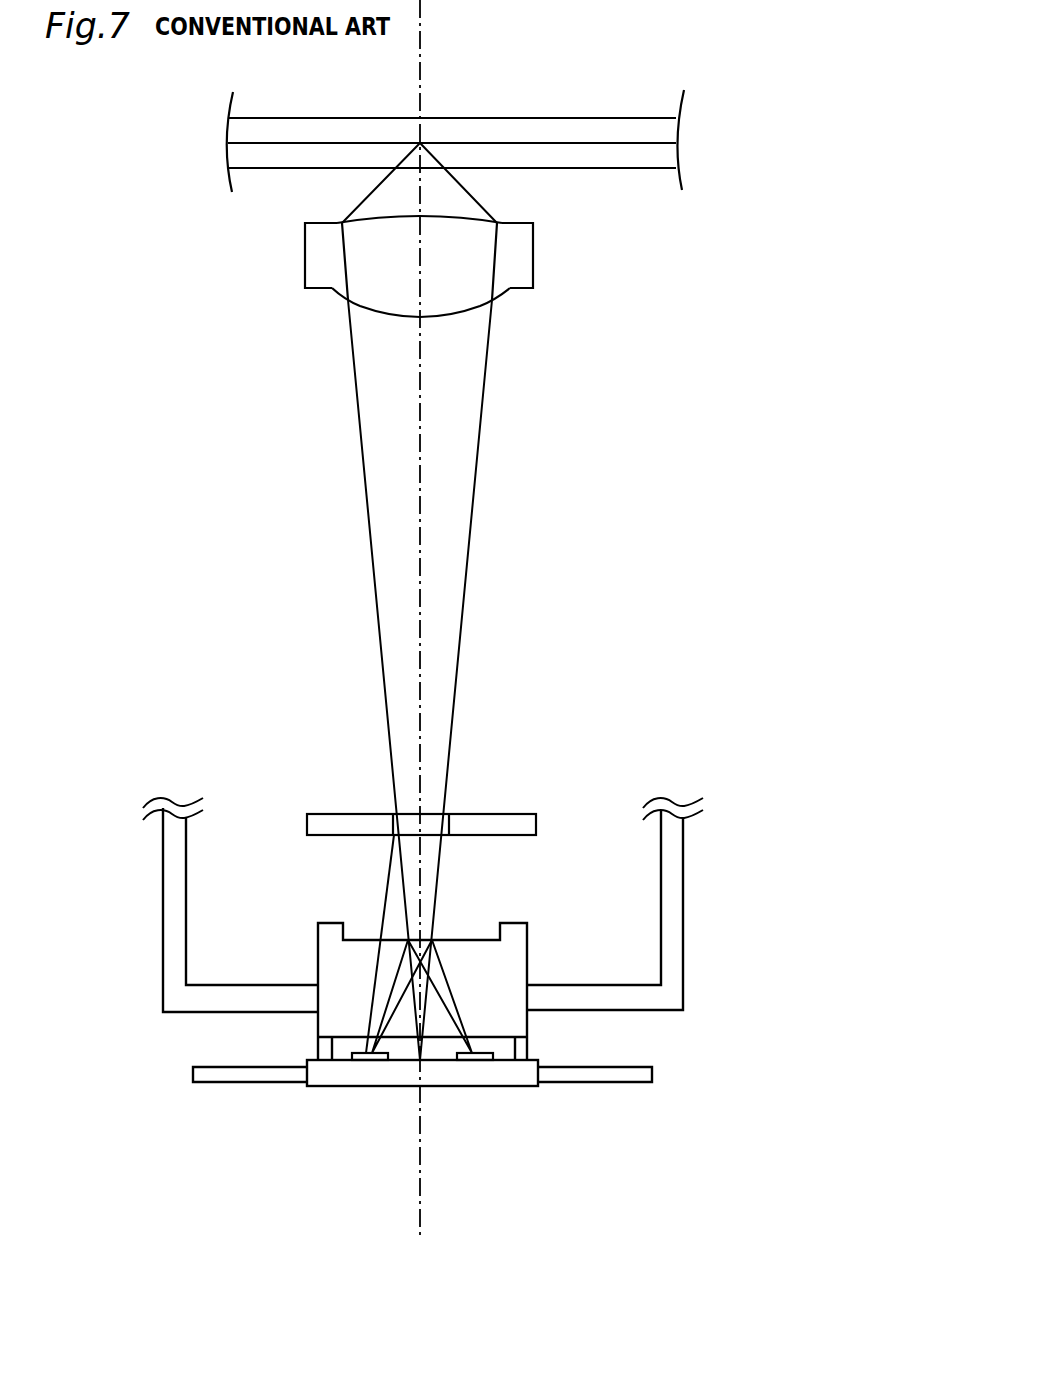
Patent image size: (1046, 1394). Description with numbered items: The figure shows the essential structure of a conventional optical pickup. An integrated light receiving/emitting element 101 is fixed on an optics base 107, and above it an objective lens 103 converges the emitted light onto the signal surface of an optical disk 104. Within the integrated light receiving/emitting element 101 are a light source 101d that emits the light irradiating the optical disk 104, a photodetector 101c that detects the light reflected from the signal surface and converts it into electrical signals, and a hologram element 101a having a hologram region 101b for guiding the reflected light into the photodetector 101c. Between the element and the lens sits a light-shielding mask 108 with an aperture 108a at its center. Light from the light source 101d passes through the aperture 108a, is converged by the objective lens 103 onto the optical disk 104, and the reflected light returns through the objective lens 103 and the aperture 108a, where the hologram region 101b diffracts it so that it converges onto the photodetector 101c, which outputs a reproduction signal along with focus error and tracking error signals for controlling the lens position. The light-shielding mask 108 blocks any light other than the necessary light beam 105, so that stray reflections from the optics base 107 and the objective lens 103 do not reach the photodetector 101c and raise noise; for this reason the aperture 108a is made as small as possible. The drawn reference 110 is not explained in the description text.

The integrated light receiving/emitting element 101 is at (524, 1078).
The hologram element 101a is at (513, 965).
The hologram region 101b is at (412, 942).
The photodetector 101c is at (372, 1060).
The light source 101d is at (421, 1062).
The objective lens 103 is at (520, 268).
The optical disk 104 is at (665, 157).
The light beam 105 is at (478, 467).
The optics base 107 is at (675, 937).
The light-shielding mask 108 is at (500, 812).
The aperture 108a is at (410, 813).
The diffracted return light 110 is at (380, 897).